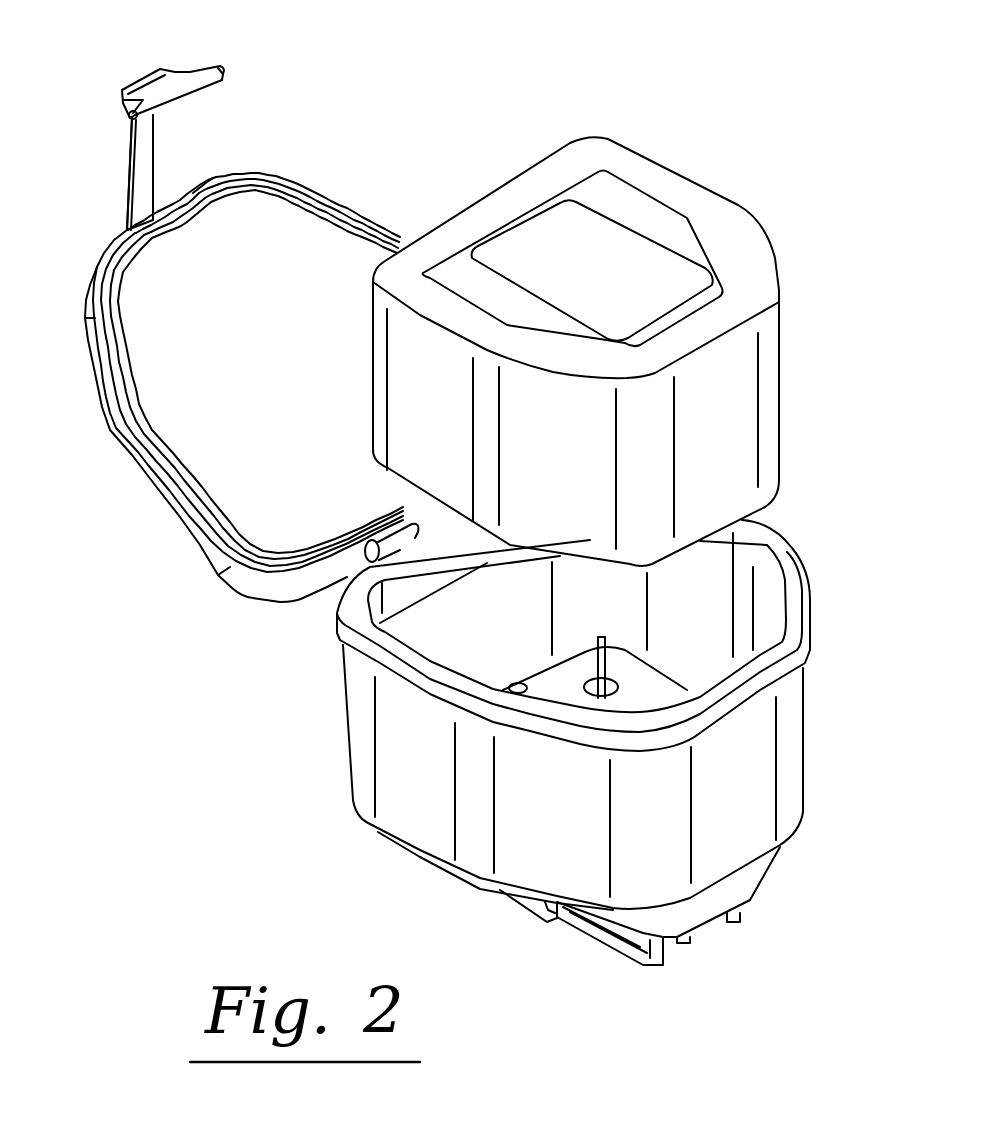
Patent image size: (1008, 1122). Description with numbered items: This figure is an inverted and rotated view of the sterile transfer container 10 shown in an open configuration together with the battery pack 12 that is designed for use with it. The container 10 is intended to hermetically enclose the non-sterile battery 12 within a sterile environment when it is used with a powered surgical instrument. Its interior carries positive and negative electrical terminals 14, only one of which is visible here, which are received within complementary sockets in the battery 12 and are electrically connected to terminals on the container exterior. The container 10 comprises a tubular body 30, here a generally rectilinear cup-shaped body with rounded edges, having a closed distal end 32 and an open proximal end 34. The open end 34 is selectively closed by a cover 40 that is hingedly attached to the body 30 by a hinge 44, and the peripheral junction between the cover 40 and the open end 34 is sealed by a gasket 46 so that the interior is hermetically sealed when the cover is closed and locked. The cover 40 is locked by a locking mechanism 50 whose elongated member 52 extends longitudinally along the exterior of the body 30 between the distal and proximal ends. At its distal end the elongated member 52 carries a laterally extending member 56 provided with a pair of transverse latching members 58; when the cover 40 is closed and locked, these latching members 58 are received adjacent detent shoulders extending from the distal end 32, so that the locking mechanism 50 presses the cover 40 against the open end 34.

The sterile transfer container 10 is at (797, 748).
The battery pack 12 is at (773, 350).
The electrical terminals 14 is at (580, 652).
The tubular body 30 is at (360, 730).
The closed distal end 32 is at (676, 922).
The open proximal end 34 is at (767, 613).
The cover 40 is at (303, 253).
The hinge 44 is at (370, 543).
The gasket 46 is at (283, 187).
The locking mechanism 50 is at (137, 181).
The elongated member 52 is at (152, 157).
The laterally extending member 56 is at (173, 72).
The transverse latching members 58 is at (220, 67).